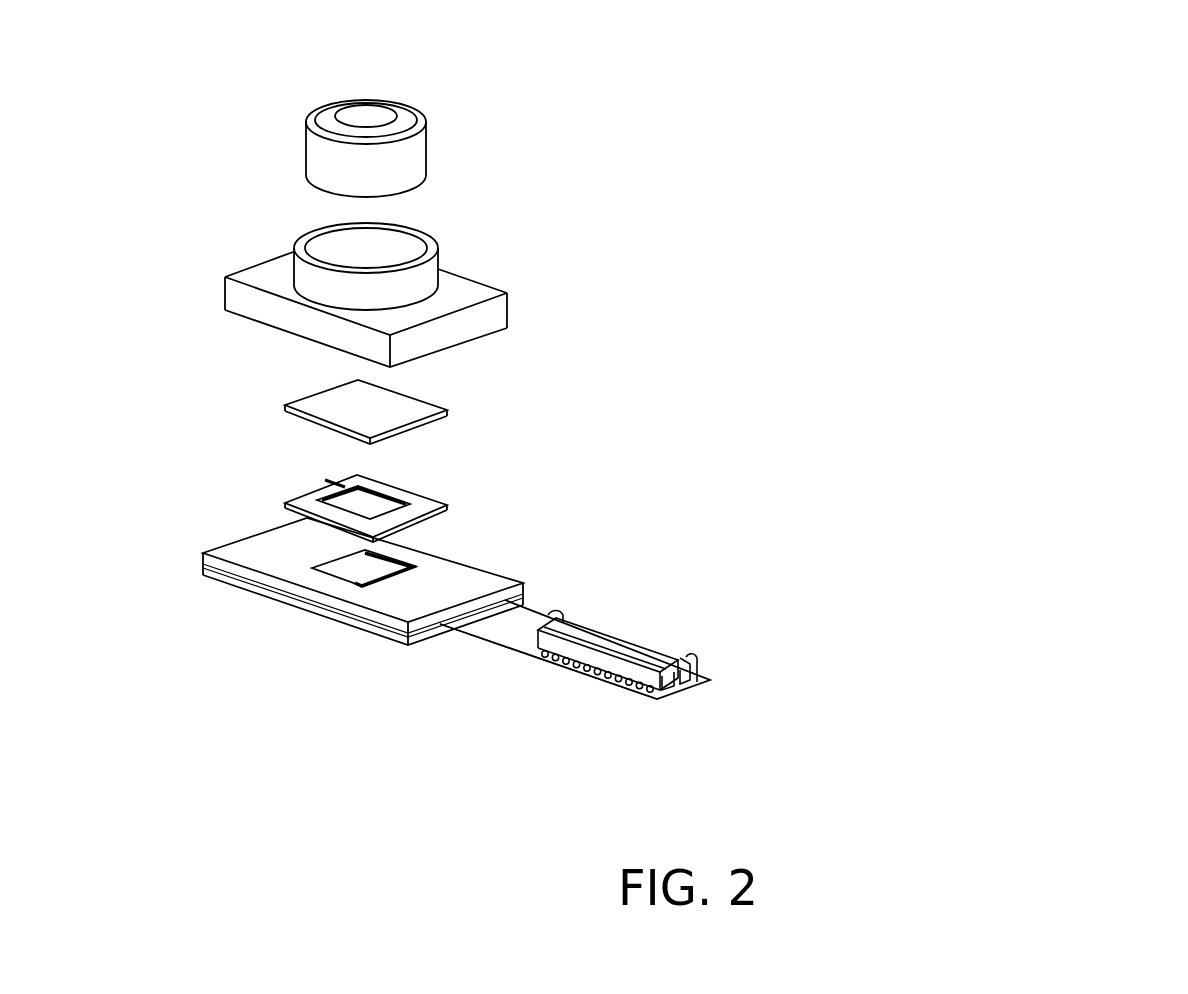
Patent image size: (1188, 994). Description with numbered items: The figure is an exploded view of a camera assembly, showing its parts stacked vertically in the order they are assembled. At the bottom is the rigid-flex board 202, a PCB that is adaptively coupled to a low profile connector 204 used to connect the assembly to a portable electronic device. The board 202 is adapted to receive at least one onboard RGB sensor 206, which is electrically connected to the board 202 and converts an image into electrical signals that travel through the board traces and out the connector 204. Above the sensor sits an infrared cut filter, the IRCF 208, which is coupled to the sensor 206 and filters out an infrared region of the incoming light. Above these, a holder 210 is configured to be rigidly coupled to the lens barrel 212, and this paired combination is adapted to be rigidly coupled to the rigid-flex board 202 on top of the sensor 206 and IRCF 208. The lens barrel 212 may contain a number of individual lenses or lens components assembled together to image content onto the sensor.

The rigid-flex board 202 is at (340, 628).
The connector 204 is at (640, 636).
The RGB sensor 206 is at (430, 496).
The infrared cut filter (IRCF) 208 is at (430, 397).
The holder 210 is at (498, 283).
The lens barrel 212 is at (430, 143).